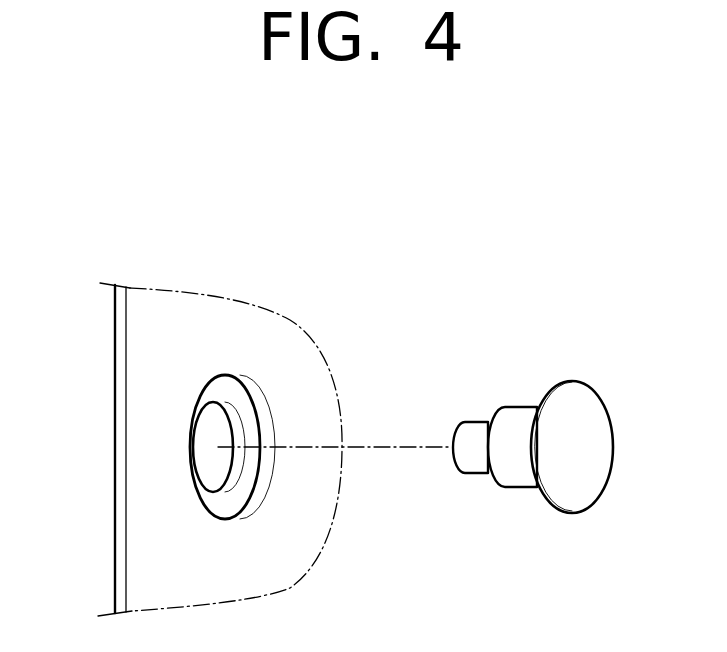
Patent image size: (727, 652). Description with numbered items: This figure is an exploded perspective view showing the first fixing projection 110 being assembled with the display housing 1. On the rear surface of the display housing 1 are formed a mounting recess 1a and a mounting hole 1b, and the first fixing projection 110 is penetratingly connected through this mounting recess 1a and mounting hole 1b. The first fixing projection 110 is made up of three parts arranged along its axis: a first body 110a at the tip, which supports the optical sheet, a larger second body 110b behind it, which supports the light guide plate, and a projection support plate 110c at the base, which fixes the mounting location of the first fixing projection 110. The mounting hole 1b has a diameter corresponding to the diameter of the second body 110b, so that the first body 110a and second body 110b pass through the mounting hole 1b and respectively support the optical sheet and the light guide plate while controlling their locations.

The display housing 1 is at (135, 488).
The mounting recess 1a is at (252, 388).
The mounting hole 1b is at (238, 425).
The first fixing projection 110 is at (490, 342).
The first body 110a is at (475, 428).
The second body 110b is at (520, 414).
The projection support plate 110c is at (592, 388).